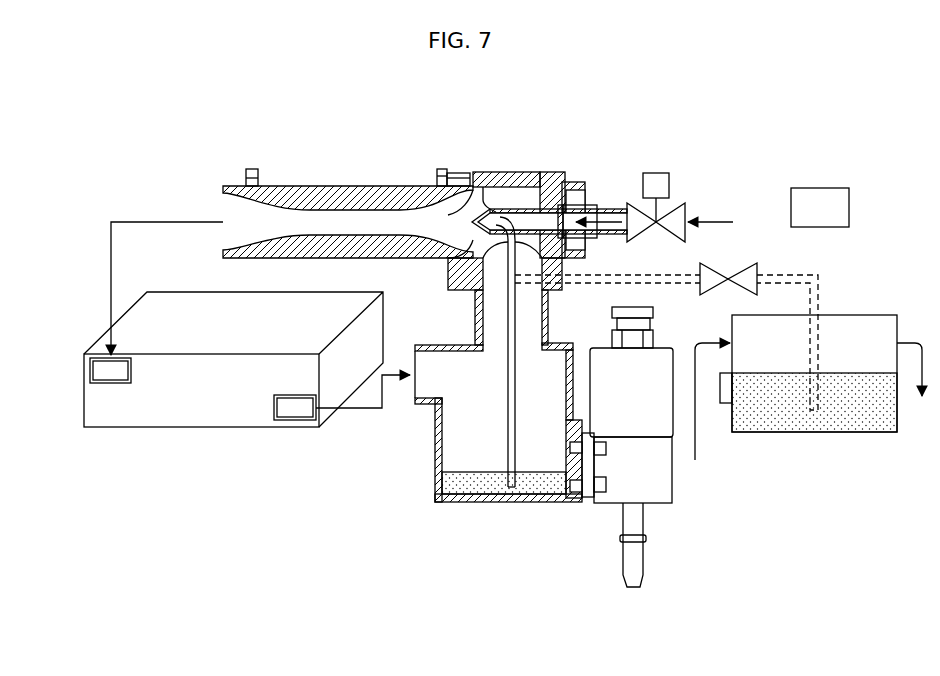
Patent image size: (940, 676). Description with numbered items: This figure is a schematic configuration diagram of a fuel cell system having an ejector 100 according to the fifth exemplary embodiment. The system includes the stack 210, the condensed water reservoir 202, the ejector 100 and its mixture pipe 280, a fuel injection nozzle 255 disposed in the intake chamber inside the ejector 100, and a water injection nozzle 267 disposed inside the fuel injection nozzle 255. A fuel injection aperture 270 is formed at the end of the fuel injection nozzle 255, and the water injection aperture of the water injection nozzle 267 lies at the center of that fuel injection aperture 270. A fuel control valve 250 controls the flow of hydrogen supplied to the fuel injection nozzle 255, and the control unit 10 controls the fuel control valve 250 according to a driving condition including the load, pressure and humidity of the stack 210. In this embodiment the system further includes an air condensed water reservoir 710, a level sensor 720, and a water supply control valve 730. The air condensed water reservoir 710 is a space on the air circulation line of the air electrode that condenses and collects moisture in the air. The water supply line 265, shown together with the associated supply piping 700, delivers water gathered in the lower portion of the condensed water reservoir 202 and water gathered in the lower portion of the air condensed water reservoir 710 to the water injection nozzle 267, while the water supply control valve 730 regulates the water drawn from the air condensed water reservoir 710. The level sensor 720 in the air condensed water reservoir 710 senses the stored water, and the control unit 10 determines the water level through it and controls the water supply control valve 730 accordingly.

The ejector 100 is at (580, 144).
The mixture pipe 280 is at (348, 184).
The fuel injection aperture 270 is at (462, 186).
The water injection nozzle 267 is at (502, 188).
The fuel injection nozzle 255 is at (548, 186).
The water supply line 265 is at (586, 286).
The fuel control valve 250 is at (672, 157).
The control unit 10 is at (821, 188).
The water supply control valve 730 is at (752, 262).
The supply line 700 is at (683, 286).
The air condensed water reservoir 710 is at (865, 315).
The level sensor 720 is at (727, 405).
The condensed water reservoir 202 is at (434, 452).
The stack 210 is at (193, 430).